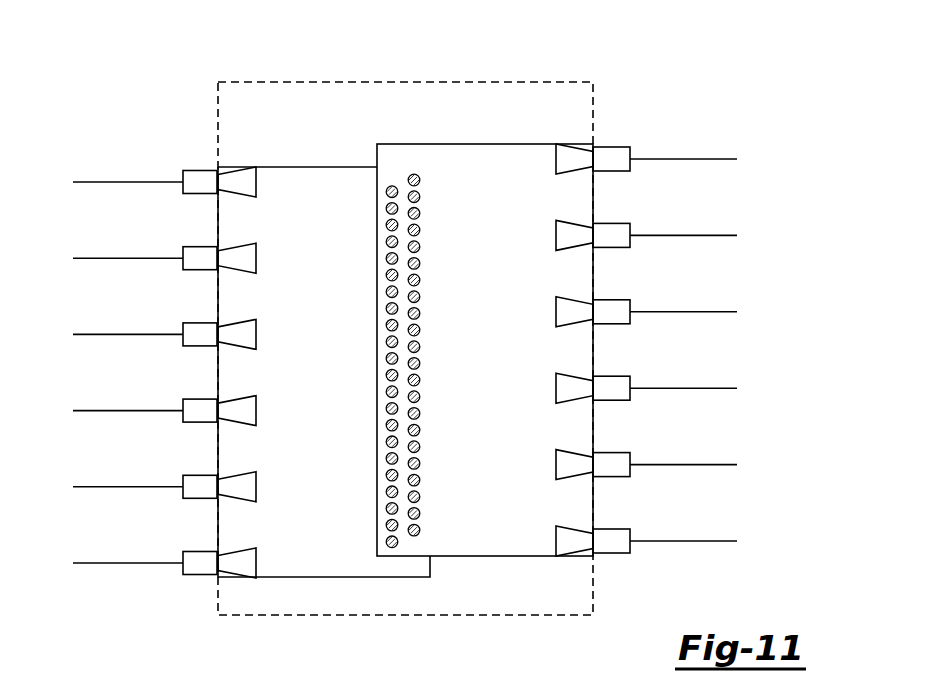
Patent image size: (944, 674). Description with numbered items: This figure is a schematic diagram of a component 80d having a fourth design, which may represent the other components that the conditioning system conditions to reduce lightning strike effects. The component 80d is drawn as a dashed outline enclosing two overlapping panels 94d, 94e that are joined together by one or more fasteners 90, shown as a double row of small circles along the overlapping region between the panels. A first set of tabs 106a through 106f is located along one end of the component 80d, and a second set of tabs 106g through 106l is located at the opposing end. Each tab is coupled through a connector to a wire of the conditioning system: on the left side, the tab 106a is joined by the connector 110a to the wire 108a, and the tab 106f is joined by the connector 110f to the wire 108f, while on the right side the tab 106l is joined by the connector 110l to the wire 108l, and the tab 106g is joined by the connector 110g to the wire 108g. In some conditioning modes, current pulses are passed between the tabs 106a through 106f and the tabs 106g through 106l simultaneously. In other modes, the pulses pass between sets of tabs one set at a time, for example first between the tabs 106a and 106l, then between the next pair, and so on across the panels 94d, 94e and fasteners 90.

The component 80d is at (293, 81).
The panel 94d is at (288, 578).
The panel 94e is at (492, 556).
The fastener 90 is at (421, 180).
The wire 108a is at (130, 182).
The connector 110a is at (200, 170).
The tab 106a is at (235, 167).
The wire 108f is at (122, 563).
The connector 110f is at (197, 552).
The tab 106f is at (232, 577).
The wire 108l is at (685, 159).
The connector 110l is at (622, 148).
The tab 106l is at (585, 149).
The wire 108g is at (693, 541).
The connector 110g is at (613, 529).
The tab 106g is at (582, 550).